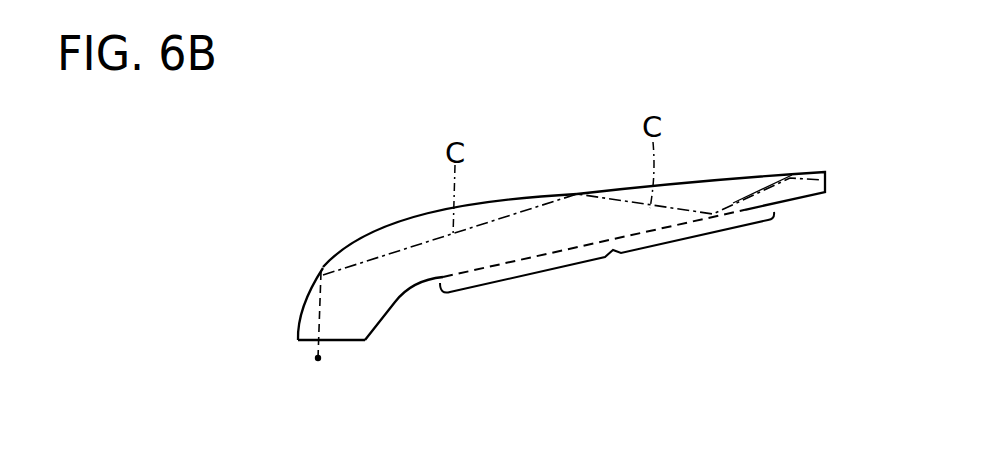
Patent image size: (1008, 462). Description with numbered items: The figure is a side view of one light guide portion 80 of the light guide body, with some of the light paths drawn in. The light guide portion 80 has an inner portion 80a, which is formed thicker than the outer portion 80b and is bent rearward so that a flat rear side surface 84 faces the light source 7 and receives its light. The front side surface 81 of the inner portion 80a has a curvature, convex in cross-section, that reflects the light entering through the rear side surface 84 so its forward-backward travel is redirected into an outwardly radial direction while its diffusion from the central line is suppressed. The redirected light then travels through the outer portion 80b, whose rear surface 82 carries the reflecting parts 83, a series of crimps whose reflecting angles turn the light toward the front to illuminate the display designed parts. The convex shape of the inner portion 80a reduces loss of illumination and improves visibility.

The light guide portion 80 is at (517, 155).
The inner portion 80a is at (316, 260).
The outer portion 80b is at (738, 172).
The front side surface 81 is at (395, 222).
The rear surface 82 is at (400, 298).
The reflecting parts 83 is at (607, 254).
The rear side surface 84 is at (355, 342).
The light source 7 is at (310, 360).